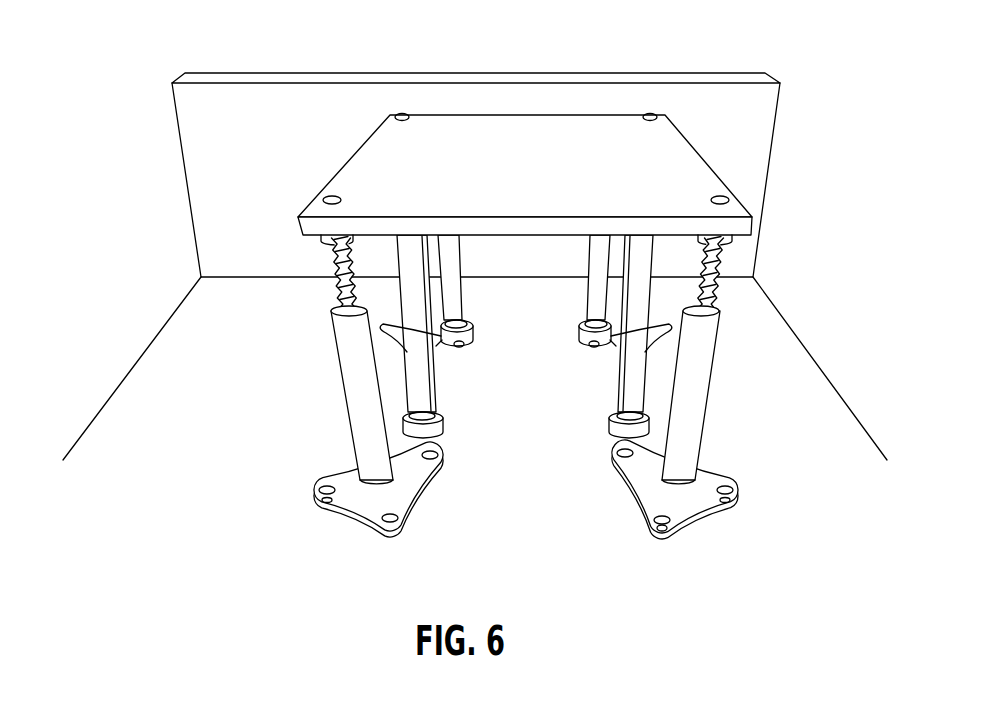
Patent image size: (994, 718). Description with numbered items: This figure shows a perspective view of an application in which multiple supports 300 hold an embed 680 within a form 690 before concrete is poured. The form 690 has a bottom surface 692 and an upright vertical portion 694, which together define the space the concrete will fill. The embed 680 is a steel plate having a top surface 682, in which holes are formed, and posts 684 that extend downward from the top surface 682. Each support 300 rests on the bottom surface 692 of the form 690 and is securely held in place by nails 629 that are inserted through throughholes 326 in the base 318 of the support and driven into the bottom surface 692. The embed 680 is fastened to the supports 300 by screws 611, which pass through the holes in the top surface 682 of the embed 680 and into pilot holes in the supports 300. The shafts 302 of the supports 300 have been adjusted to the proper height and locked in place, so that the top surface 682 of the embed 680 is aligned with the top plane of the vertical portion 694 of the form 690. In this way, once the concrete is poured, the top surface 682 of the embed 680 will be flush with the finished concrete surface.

The form 690 is at (475, 242).
The vertical portion of the form 694 is at (272, 194).
The bottom surface of the form 692 is at (233, 462).
The embed 680 is at (520, 336).
The top surface of the embed 682 is at (525, 163).
The screws 611 is at (720, 200).
The posts 684 is at (630, 383).
The shafts 302 is at (326, 292).
The supports 300 is at (332, 373).
The base 318 is at (549, 510).
The nails 629 is at (377, 523).
The throughholes 326 is at (677, 527).